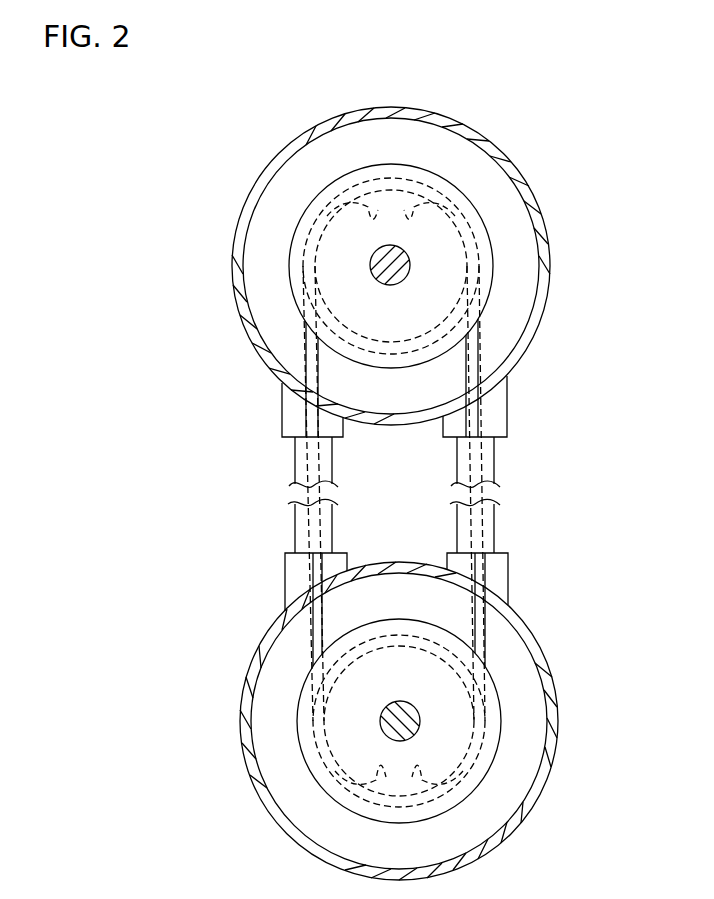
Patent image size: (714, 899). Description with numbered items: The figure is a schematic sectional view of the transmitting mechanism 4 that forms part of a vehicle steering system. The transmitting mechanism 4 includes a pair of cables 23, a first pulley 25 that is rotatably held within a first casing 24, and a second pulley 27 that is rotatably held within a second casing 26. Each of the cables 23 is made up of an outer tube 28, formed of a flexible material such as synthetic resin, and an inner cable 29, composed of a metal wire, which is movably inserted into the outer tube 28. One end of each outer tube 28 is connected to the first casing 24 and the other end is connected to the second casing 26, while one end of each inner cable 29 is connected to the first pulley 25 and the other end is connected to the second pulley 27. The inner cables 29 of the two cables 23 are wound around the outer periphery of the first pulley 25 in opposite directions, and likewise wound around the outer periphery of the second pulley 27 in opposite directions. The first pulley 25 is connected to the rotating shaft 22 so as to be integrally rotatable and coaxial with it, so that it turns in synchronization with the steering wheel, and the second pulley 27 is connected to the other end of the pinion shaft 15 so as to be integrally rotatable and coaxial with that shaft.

The transmitting mechanism 4 is at (170, 140).
The first casing 24 is at (536, 227).
The first pulley 25 is at (297, 255).
The rotating shaft 22 is at (392, 265).
The cables 23 is at (282, 463).
The outer tube 28 is at (298, 526).
The inner cable 29 is at (316, 637).
The second casing 26 is at (535, 795).
The second pulley 27 is at (307, 735).
The pinion shaft 15 is at (402, 723).